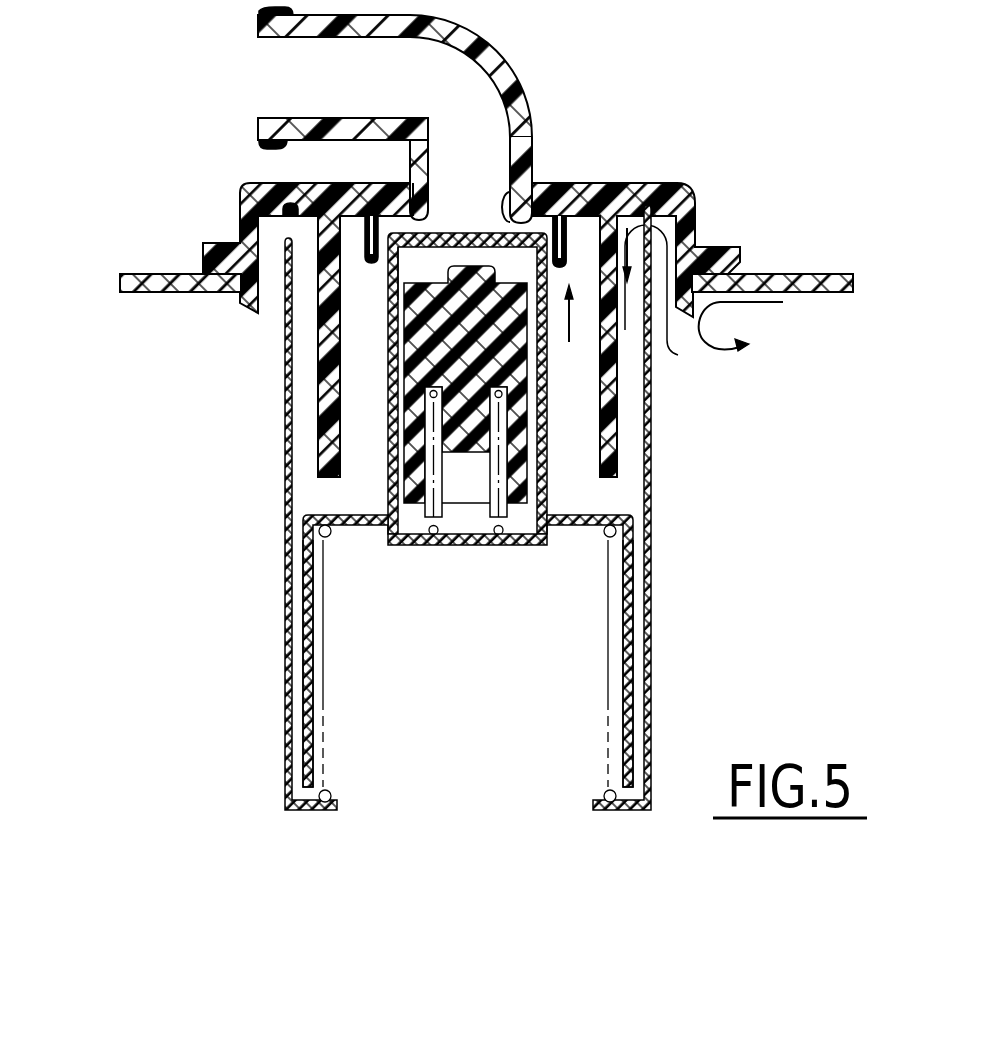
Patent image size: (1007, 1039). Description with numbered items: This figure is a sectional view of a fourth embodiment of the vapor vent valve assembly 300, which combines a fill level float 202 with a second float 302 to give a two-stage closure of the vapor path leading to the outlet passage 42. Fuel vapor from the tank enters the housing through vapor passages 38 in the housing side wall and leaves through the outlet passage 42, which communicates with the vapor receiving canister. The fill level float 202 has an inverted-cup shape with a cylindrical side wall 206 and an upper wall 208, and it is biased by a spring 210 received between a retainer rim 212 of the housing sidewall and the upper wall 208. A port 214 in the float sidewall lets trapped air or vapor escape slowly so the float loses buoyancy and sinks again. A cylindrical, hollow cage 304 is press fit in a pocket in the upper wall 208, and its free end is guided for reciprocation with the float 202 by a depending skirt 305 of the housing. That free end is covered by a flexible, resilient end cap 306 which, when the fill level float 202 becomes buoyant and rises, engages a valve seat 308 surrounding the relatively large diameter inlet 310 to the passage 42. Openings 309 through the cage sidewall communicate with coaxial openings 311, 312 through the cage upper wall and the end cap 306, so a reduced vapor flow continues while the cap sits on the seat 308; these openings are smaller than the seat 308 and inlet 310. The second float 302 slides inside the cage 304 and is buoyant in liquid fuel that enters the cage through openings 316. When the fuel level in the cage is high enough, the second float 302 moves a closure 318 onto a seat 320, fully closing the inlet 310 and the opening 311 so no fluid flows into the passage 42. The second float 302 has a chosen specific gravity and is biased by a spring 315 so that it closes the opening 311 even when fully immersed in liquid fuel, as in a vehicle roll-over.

The vapor passages 38 is at (270, 318).
The outlet passage 42 is at (370, 119).
The fill level float 202 is at (541, 651).
The cylindrical side wall 206 is at (312, 690).
The upper wall 208 is at (350, 532).
The spring 210 is at (327, 612).
The retainer rim 212 is at (325, 803).
The port 214 is at (628, 582).
The valve assembly 300 is at (92, 671).
The second float 302 is at (368, 415).
The cylindrical cage 304 is at (540, 397).
The depending skirt 305 is at (540, 290).
The end cap 306 is at (450, 232).
The valve seat 308 is at (498, 227).
The openings 309 is at (676, 465).
The inlet 310 is at (425, 222).
The opening 311 is at (393, 273).
The opening 312 is at (470, 232).
The spring 315 is at (437, 505).
The openings 316 is at (495, 510).
The closure 318 is at (393, 317).
The seat 320 is at (548, 250).